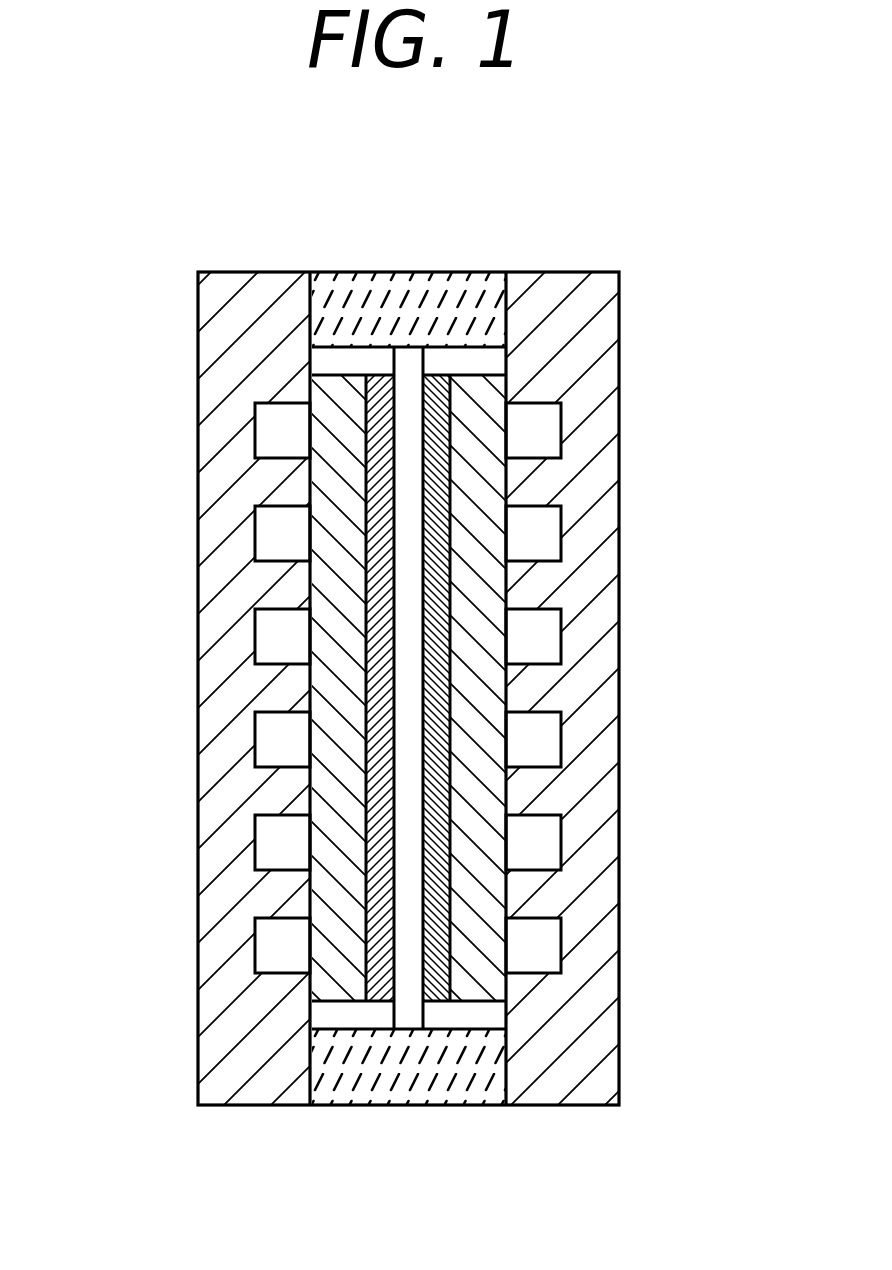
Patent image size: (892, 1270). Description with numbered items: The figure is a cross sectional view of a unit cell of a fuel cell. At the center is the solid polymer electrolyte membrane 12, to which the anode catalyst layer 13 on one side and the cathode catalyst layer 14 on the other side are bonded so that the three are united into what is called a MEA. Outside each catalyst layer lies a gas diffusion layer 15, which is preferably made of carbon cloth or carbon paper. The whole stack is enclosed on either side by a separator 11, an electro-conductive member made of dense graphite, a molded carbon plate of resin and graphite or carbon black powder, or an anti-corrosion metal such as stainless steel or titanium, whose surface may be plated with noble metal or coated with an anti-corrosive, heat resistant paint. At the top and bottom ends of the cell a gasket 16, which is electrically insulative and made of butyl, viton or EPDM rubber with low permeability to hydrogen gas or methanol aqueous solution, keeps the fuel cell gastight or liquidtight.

The separator 11 is at (588, 340).
The solid polymer electrolyte membrane 12 is at (408, 800).
The anode catalyst layer 13 is at (380, 502).
The cathode catalyst layer 14 is at (437, 907).
The gas diffusion layer 15 is at (477, 588).
The gasket 16 is at (421, 285).